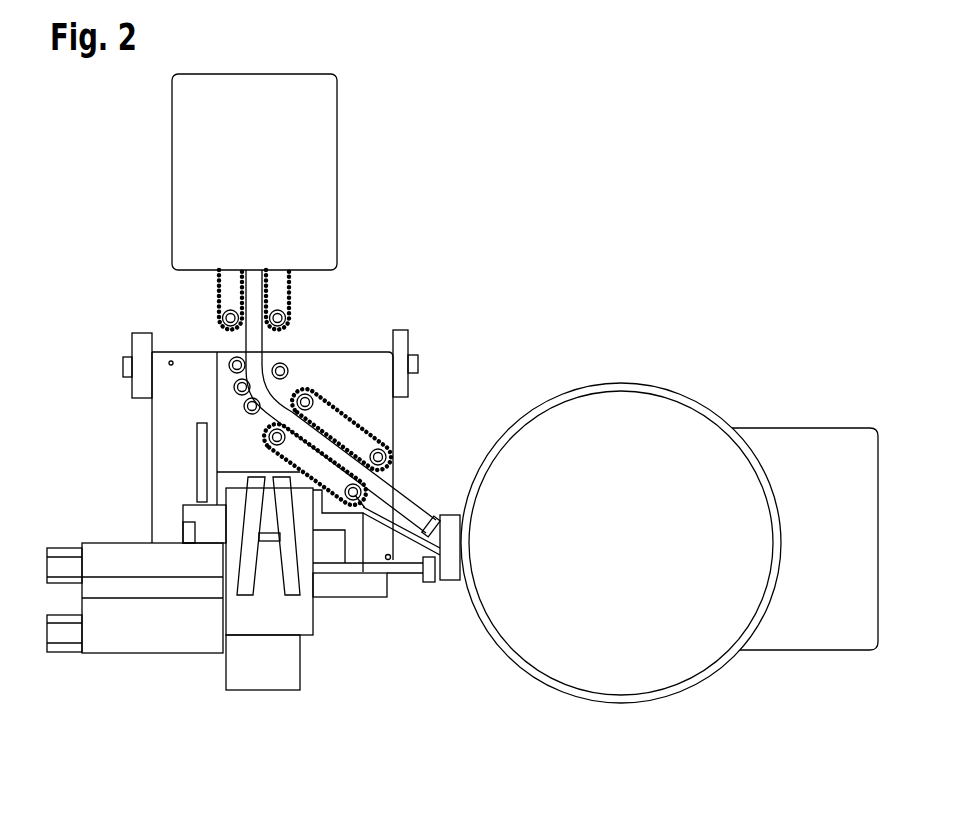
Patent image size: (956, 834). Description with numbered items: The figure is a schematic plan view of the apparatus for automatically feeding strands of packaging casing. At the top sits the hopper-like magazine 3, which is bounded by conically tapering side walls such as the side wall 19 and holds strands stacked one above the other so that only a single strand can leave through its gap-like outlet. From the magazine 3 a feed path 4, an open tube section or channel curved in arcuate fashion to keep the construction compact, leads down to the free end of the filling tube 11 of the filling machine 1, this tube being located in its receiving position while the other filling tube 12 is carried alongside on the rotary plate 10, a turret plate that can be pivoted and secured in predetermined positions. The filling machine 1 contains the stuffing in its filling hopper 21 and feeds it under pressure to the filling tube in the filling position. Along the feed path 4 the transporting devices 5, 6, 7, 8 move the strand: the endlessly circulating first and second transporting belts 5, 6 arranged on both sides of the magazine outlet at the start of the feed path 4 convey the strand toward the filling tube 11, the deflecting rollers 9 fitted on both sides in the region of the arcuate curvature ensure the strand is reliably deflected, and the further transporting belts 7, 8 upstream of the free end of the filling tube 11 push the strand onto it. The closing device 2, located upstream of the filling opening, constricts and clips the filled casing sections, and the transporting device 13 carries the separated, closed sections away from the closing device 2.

The filling machine 1 is at (669, 502).
The closing device 2 is at (107, 503).
The magazine 3 is at (291, 202).
The feed path 4 is at (356, 403).
The first transporting belt 5 is at (215, 298).
The second transporting belt 6 is at (287, 292).
The transporting device 7 is at (285, 458).
The third transporting belt 8 is at (340, 412).
The deflecting rollers 9 is at (244, 405).
The rotary plate 10 is at (452, 558).
The filling tube 11 is at (405, 502).
The filling tube 12 is at (410, 573).
The transporting device 13 is at (157, 630).
The side wall 19 is at (302, 133).
The filling hopper 21 is at (686, 400).